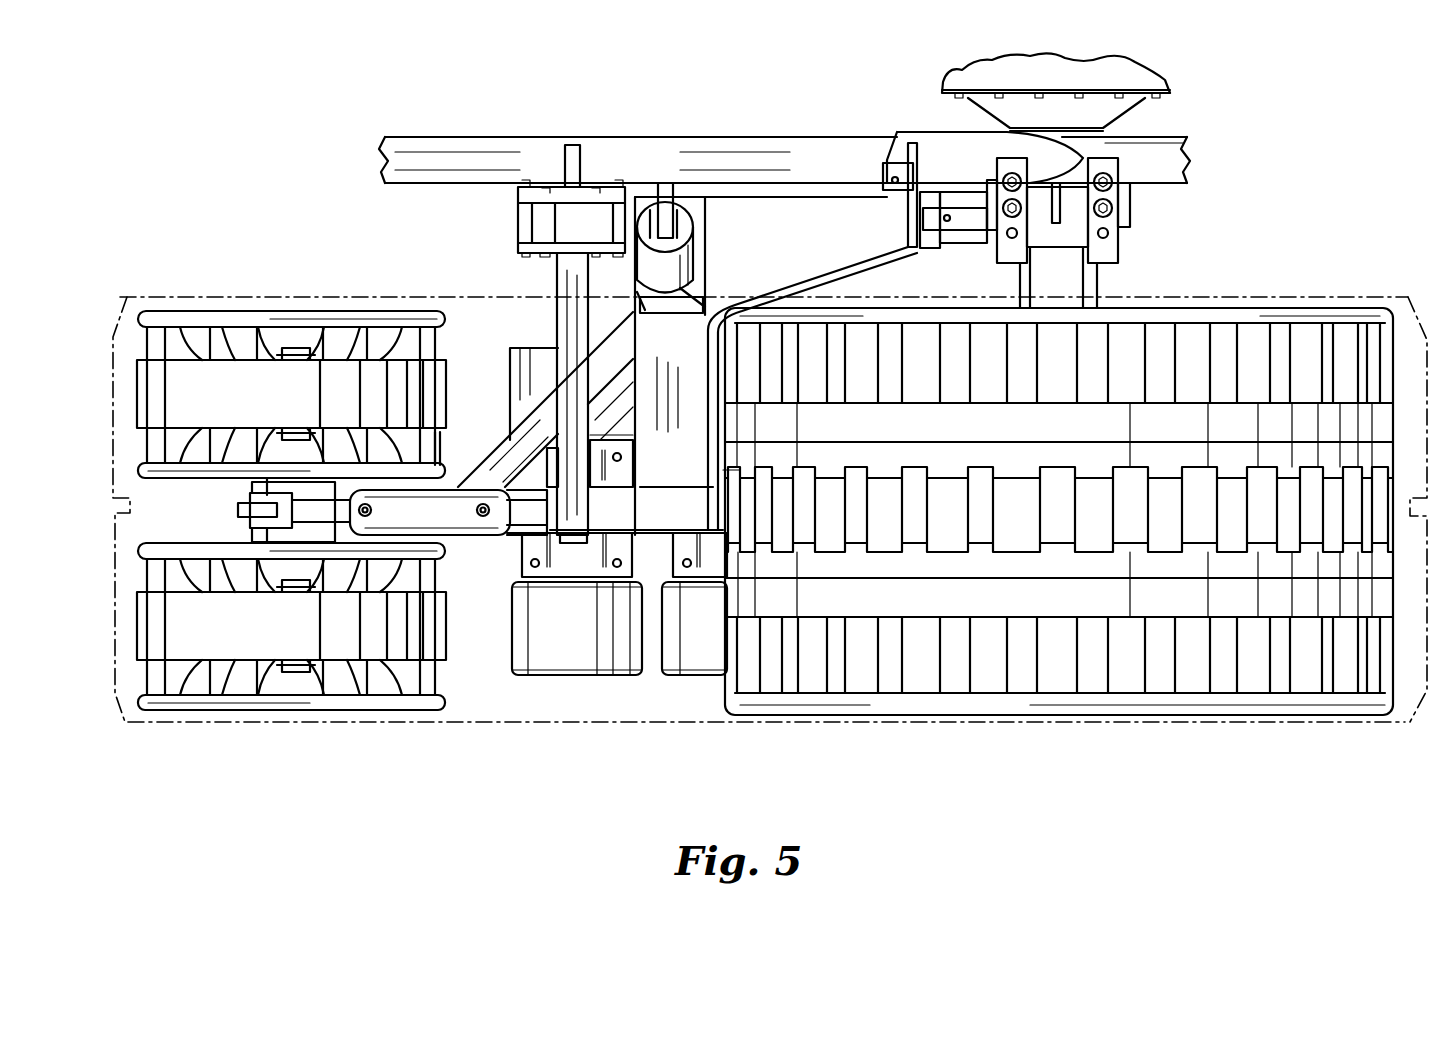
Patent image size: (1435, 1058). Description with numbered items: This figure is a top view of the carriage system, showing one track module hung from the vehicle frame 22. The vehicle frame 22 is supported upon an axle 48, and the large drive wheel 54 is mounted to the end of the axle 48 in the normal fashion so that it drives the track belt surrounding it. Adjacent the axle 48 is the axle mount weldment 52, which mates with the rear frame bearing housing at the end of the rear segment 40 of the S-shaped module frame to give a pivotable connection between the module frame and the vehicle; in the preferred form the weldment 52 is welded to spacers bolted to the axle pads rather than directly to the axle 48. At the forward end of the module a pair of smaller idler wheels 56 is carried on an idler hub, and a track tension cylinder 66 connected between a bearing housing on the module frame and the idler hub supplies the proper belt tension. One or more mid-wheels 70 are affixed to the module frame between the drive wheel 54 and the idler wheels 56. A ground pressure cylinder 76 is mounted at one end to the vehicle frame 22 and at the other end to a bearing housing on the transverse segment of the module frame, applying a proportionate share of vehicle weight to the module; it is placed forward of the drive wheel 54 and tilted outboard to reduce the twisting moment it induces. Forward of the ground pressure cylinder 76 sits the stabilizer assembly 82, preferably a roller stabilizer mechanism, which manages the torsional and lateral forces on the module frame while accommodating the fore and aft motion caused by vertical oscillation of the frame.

The vehicle frame 22 is at (735, 160).
The rear segment 40 is at (827, 220).
The axle 48 is at (1075, 282).
The axle mount weldment 52 is at (970, 240).
The drive wheel 54 is at (905, 710).
The idler wheels 56 is at (340, 705).
The track tension cylinder 66 is at (440, 520).
The mid-wheels 70 is at (573, 655).
The ground pressure cylinder 76 is at (680, 268).
The stabilizer assembly 82 is at (510, 226).